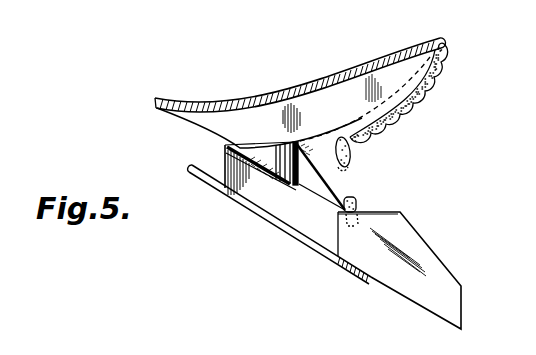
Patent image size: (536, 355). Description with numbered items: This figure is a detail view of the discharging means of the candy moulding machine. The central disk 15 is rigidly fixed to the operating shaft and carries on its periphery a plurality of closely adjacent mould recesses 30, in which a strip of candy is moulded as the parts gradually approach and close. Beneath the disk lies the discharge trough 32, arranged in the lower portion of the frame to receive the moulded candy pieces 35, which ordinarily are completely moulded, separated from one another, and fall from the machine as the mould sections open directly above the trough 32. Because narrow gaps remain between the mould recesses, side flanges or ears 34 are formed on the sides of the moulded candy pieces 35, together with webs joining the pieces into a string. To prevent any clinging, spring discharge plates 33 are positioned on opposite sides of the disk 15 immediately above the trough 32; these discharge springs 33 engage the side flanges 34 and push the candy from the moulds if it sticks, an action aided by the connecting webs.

The central disk 15 is at (248, 118).
The mould recesses 30 is at (155, 102).
The discharge trough 32 is at (324, 247).
The spring discharge plates 33 is at (312, 138).
The side flanges or ears 34 is at (390, 123).
The moulded candy pieces 35 is at (420, 98).